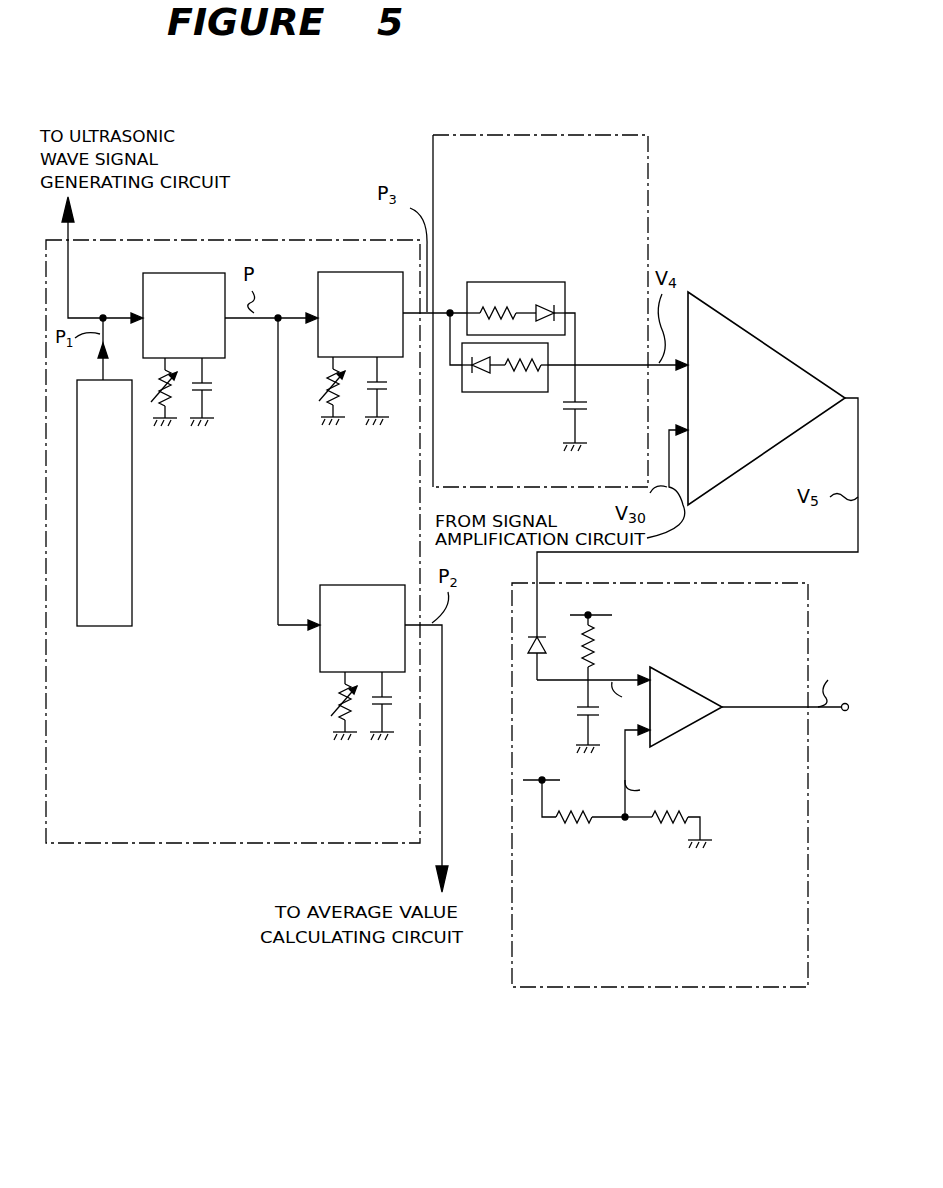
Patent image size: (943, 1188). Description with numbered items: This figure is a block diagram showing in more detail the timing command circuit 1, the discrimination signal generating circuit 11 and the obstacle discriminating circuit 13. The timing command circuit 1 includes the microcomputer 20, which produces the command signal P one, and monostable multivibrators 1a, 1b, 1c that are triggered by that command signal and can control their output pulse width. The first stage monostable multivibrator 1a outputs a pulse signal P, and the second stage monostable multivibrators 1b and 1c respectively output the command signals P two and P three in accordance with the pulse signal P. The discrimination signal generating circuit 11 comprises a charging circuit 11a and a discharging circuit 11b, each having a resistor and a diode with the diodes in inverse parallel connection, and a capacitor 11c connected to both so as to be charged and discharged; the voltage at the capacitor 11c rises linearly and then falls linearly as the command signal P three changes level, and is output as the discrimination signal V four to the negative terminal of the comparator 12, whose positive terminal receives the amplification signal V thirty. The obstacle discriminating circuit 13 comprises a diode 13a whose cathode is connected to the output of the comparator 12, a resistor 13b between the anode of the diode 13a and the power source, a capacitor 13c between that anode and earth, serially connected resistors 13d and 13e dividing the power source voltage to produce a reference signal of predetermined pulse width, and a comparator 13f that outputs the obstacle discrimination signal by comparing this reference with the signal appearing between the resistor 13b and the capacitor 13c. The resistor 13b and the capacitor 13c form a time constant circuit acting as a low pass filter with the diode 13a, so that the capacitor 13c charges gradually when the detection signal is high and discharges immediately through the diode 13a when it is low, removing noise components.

The timing command circuit 1 is at (115, 845).
The first stage monostable multivibrator 1a is at (218, 358).
The second stage monostable multivibrator 1b is at (353, 585).
The second stage monostable multivibrator 1c is at (322, 357).
The microcomputer 20 is at (132, 530).
The discrimination signal generating circuit 11 is at (505, 135).
The charging circuit 11a is at (532, 282).
The discharging circuit 11b is at (490, 392).
The capacitor 11c is at (590, 405).
The comparator 12 is at (752, 334).
The obstacle discriminating circuit 13 is at (597, 987).
The diode 13a is at (546, 640).
The resistor 13b is at (600, 658).
The capacitor 13c is at (574, 719).
The resistor 13d is at (572, 828).
The resistor 13e is at (665, 828).
The comparator 13f is at (697, 683).